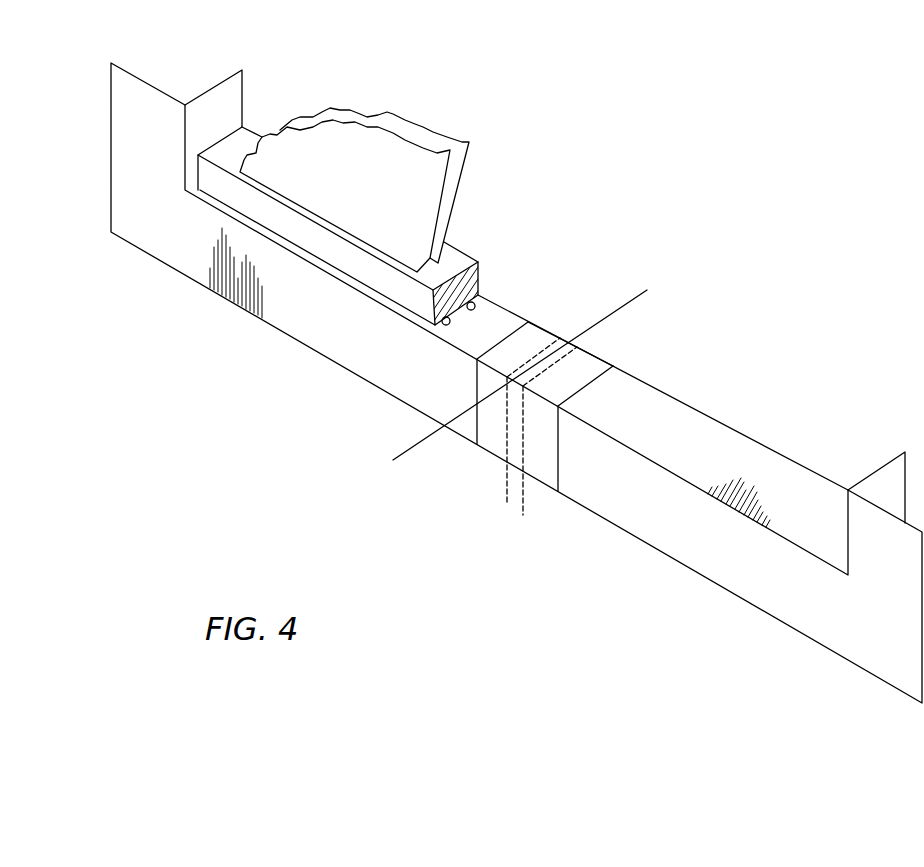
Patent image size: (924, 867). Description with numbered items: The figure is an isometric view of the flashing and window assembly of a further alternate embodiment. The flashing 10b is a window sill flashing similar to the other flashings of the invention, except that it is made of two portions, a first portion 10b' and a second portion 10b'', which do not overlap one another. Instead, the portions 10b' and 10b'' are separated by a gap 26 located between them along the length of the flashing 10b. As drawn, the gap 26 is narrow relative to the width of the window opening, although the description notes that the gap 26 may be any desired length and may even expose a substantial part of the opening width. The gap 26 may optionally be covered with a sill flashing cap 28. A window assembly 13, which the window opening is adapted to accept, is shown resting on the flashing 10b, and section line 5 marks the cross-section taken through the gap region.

The window assembly 13 is at (370, 92).
The flashing 10b is at (516, 383).
The portion of flashing 10b' is at (530, 297).
The portion of flashing 10b'' is at (699, 428).
The gap 26 is at (547, 511).
The sill flashing cap 28 is at (584, 371).
The section line 5- 5 is at (303, 395).